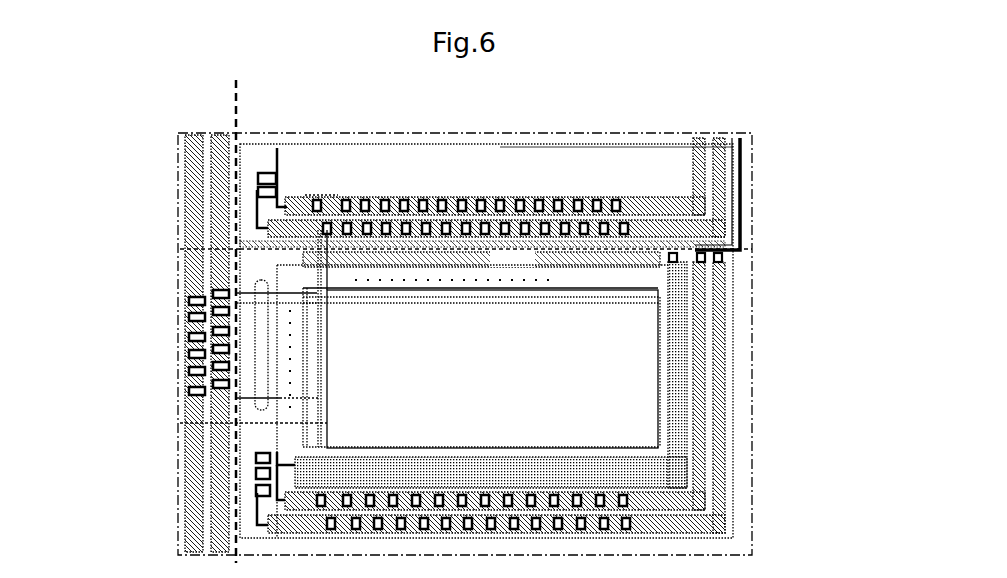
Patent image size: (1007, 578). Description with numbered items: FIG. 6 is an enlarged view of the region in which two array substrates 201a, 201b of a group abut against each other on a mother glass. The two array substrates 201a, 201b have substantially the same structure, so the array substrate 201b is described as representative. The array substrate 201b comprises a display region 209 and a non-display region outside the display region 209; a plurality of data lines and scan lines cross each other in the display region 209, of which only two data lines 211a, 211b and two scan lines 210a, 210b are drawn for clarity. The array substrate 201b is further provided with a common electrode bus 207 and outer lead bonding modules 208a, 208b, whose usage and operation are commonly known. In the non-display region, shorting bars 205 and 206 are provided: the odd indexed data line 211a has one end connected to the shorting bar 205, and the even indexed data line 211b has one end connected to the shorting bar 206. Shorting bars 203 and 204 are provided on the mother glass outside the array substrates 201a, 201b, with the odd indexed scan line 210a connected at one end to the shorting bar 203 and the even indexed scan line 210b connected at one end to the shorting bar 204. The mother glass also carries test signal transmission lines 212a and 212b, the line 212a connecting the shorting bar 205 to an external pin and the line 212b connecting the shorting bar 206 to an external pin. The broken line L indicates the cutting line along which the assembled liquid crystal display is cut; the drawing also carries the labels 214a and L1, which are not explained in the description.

The array substrate 201a is at (267, 137).
The array substrate 201b is at (226, 250).
The shorting bar 203 is at (200, 165).
The shorting bar 204 is at (222, 200).
The shorting bar 205 is at (695, 150).
The shorting bar 206 is at (730, 140).
The common electrode bus 207 is at (675, 460).
The outer lead bonding module 208a is at (425, 258).
The outer lead bonding module 208b is at (257, 340).
The display region 209 is at (640, 390).
The scan line 210a is at (237, 293).
The scan line 210b is at (186, 312).
The data line 211a is at (237, 398).
The data line 211b is at (180, 424).
The test signal transmission line 212a is at (737, 157).
The test signal transmission line 212b is at (743, 205).
The connection pad 214a is at (336, 191).
The cutting line L is at (753, 249).
The cutting line L1 is at (233, 307).